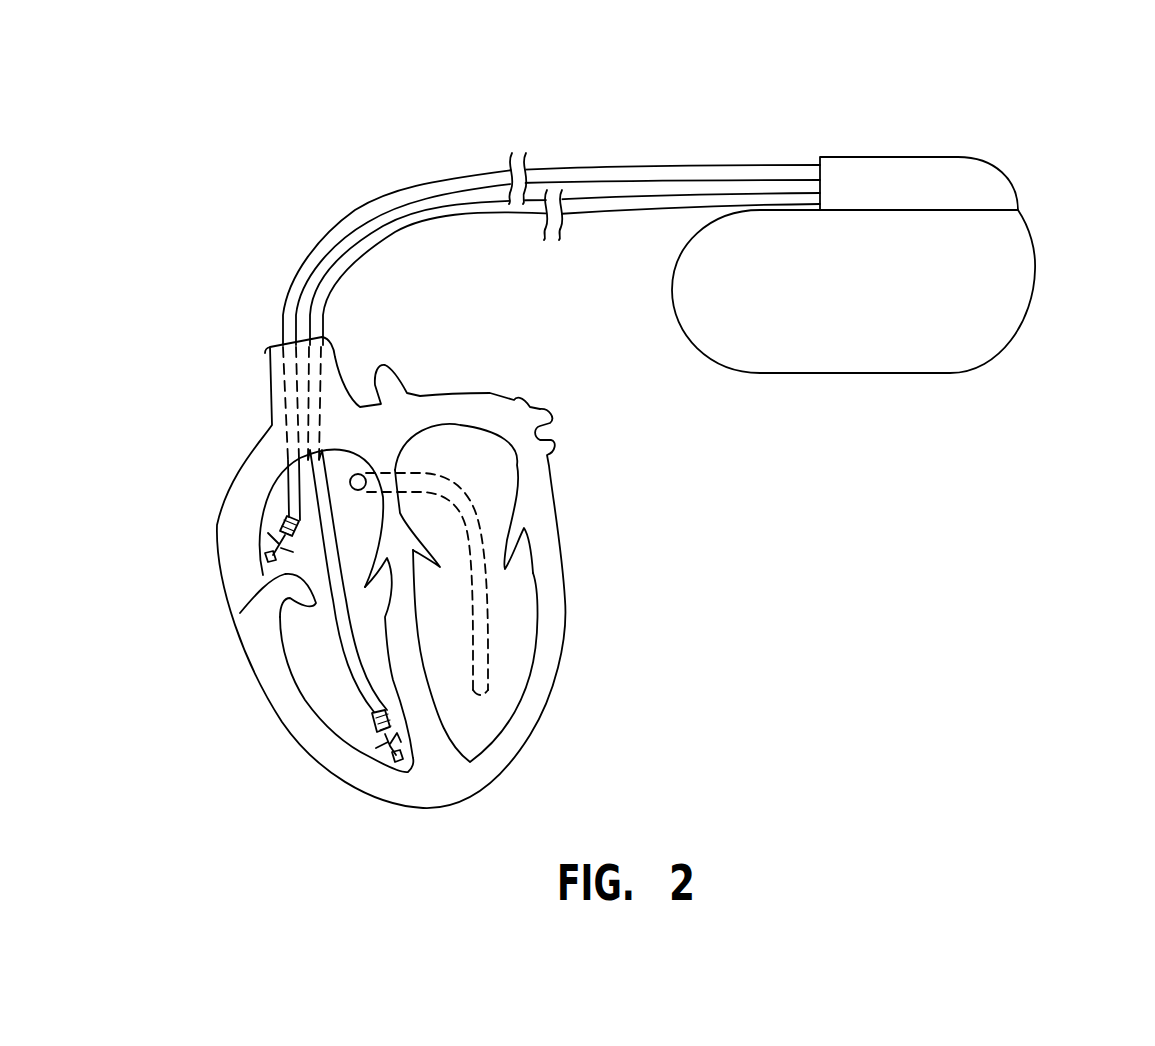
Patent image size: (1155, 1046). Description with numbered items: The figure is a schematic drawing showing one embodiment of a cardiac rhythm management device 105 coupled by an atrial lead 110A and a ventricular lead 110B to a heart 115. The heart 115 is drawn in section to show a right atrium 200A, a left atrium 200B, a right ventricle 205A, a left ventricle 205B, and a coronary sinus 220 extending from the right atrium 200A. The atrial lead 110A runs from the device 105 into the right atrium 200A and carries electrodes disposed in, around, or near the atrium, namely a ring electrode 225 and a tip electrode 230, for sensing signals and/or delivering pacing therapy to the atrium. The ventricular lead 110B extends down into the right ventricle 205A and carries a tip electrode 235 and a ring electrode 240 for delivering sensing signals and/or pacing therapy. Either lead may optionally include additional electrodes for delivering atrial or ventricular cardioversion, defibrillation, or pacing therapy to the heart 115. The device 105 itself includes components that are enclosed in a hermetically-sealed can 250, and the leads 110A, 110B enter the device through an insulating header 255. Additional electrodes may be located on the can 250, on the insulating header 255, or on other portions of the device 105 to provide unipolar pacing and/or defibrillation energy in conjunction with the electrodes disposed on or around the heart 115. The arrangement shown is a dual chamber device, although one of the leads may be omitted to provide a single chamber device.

The device 105 is at (904, 102).
The atrial lead 110A is at (437, 183).
The ventricular lead 110B is at (453, 233).
The heart 115 is at (565, 608).
The right atrium 200A is at (245, 612).
The left atrium 200B is at (500, 476).
The right ventricle 205A is at (317, 648).
The left ventricle 205B is at (507, 667).
The coronary sinus 220 is at (352, 488).
The ring electrode 225 is at (286, 518).
The tip electrode 230 is at (263, 558).
The tip electrode 235 is at (397, 762).
The ring electrode 240 is at (375, 733).
The can 250 is at (1035, 261).
The insulating header 255 is at (1007, 181).